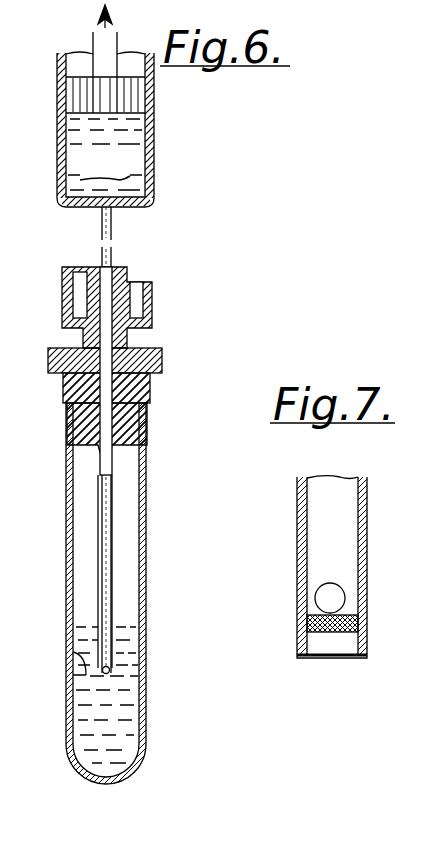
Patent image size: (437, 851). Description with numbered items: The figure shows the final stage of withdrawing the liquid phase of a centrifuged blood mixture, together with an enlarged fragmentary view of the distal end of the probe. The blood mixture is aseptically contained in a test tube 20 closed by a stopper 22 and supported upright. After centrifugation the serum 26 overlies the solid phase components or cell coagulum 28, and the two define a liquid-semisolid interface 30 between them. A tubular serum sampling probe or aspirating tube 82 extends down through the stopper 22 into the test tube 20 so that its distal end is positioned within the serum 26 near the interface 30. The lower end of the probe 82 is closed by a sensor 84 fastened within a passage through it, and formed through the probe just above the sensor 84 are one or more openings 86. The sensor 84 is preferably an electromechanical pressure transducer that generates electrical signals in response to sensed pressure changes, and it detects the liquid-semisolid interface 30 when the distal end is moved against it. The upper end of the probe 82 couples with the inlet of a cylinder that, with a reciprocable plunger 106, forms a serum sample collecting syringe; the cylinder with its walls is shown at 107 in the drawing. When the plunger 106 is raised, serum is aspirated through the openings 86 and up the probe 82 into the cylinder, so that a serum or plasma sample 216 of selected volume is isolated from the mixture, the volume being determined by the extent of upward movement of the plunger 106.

In FIG. 6, the test tube 20 is at (145, 541).
In FIG. 6, the stopper 22 is at (150, 393).
In FIG. 6, the serum 26 is at (126, 647).
In FIG. 6, the cell coagulum 28 is at (116, 705).
In FIG. 6, the liquid-semisolid interface 30 is at (72, 652).
In FIG. 6, the serum sampling probe 82 is at (108, 230).
In FIG. 7, the serum sampling probe 82 is at (297, 556).
In FIG. 7, the sensor 84 is at (333, 633).
In FIG. 7, the openings 86 is at (330, 600).
In FIG. 6, the plunger 106 is at (145, 98).
In FIG. 6, the container 107 is at (154, 139).
In FIG. 6, the serum sample 216 is at (105, 154).